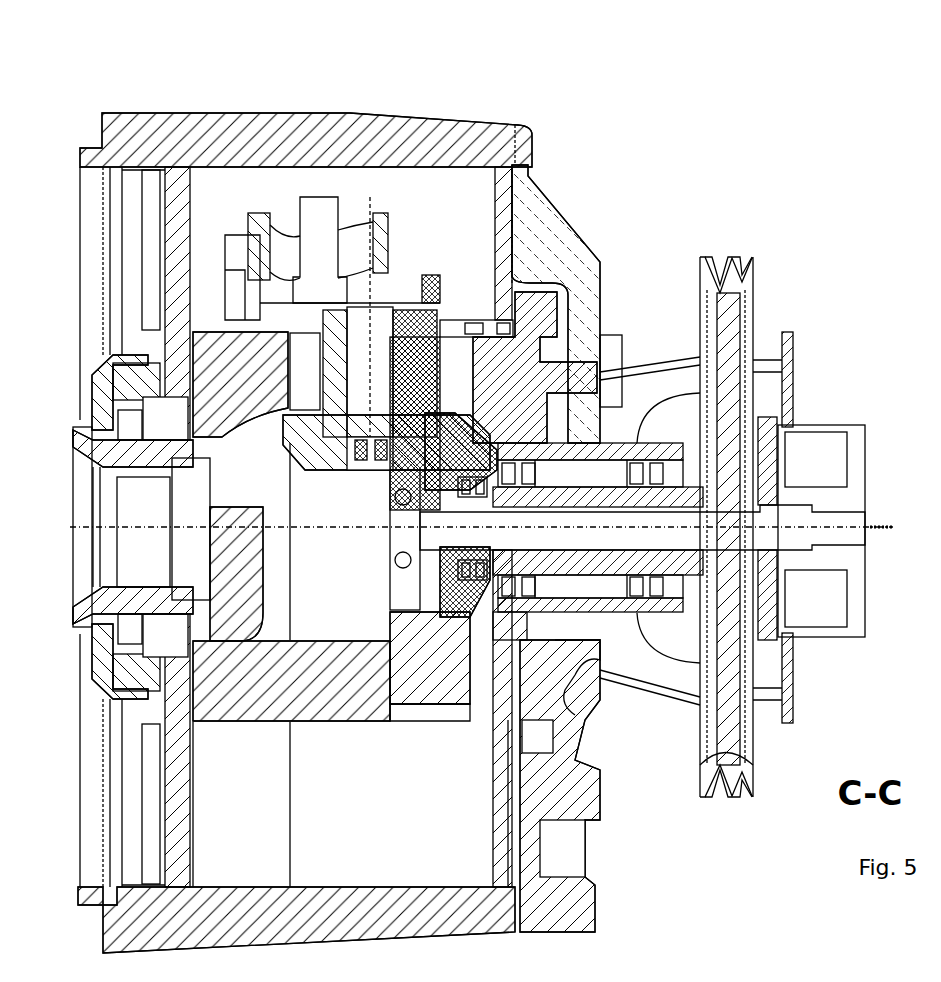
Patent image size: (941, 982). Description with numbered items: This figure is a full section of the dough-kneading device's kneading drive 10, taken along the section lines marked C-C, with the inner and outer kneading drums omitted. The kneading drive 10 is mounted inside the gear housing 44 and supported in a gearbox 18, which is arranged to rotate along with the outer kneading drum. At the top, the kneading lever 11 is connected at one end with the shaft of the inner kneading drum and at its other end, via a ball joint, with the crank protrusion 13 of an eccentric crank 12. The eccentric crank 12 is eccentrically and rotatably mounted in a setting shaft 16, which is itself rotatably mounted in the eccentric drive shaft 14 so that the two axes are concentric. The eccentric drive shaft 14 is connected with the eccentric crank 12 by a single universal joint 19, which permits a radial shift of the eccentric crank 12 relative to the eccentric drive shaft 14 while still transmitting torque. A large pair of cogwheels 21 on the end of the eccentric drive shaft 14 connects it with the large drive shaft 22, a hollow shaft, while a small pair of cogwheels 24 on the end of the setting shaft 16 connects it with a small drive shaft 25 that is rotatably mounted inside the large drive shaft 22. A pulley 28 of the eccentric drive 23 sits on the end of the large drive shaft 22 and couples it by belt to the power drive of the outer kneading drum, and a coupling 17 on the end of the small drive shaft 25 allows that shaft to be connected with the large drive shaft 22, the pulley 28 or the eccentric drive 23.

The kneading drive 10 is at (305, 739).
The kneading lever 11 is at (255, 217).
The eccentric crank 12 is at (362, 297).
The crank protrusion 13 is at (325, 240).
The eccentric drive shaft 14 is at (455, 435).
The setting shaft 16 is at (413, 335).
The coupling 17 is at (833, 633).
The gearbox 18 is at (325, 705).
The single universal joint 19 is at (435, 282).
The large pair of cogwheels 21 is at (548, 365).
The large drive shaft 22 is at (573, 560).
The eccentric drive 23 is at (685, 283).
The small pair of cogwheels 24 is at (395, 508).
The small drive shaft 25 is at (507, 538).
The pulley 28 is at (730, 787).
The gear housing 44 is at (153, 145).